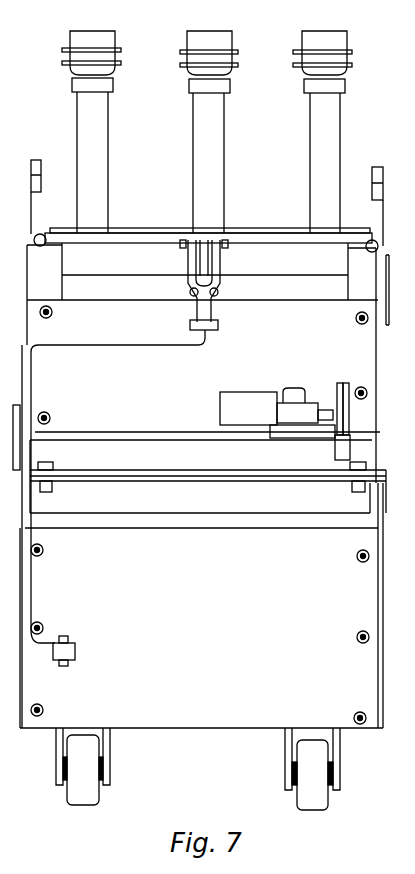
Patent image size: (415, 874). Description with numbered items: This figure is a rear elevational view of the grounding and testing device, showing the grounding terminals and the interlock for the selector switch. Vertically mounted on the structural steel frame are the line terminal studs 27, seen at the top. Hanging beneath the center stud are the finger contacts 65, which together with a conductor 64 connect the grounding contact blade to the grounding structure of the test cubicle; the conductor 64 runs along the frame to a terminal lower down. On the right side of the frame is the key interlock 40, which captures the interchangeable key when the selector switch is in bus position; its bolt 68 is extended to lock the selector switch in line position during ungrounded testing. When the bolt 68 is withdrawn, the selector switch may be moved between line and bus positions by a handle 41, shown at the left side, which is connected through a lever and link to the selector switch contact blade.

The line terminal stud 27 is at (116, 44).
The finger contacts 65 is at (220, 258).
The conductor 64 is at (118, 493).
The key interlock 40 is at (335, 389).
The bolt 68 is at (333, 420).
The handle 41 is at (13, 470).